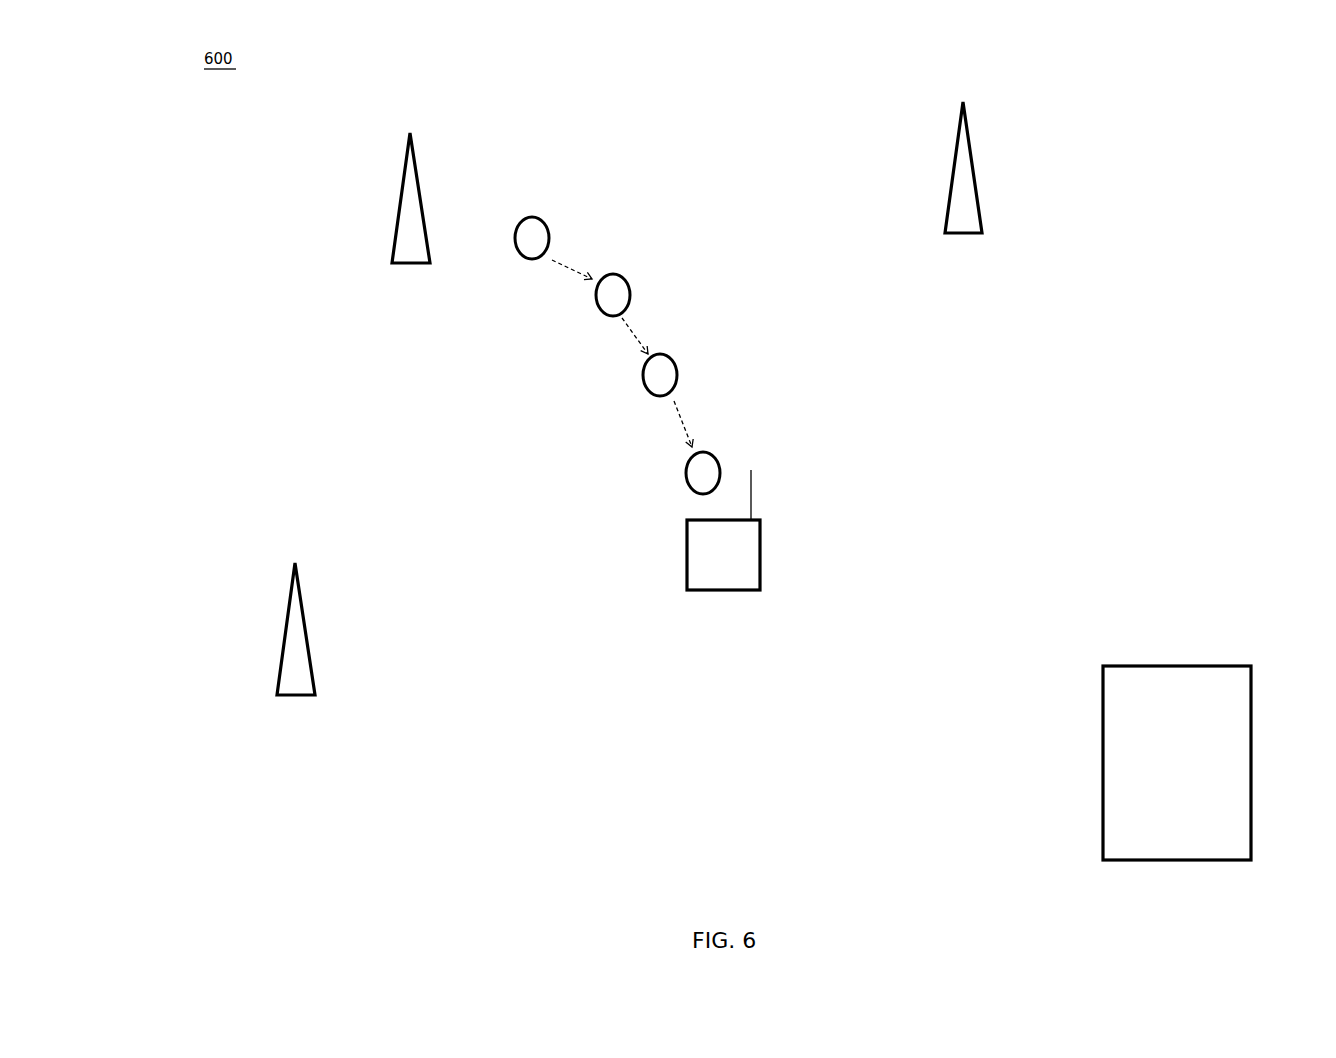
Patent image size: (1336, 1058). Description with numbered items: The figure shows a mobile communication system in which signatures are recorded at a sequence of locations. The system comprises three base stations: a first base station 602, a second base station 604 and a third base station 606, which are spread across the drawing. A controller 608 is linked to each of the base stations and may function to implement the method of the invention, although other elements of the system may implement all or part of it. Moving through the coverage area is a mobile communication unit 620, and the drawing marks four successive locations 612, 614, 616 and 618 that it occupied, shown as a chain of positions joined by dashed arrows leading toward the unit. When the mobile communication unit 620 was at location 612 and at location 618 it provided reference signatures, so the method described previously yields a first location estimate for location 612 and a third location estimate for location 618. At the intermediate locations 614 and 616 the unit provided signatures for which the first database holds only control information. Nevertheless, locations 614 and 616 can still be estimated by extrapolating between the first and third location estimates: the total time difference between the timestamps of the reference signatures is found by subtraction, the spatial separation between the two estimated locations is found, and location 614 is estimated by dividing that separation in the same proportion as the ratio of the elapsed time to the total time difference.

The base station BS1 602 is at (397, 198).
The base station BS2 604 is at (282, 639).
The base station BS3 606 is at (973, 148).
The controller 608 is at (1103, 732).
The first location 612 is at (543, 217).
The second location 614 is at (627, 275).
The third location 616 is at (680, 382).
The fourth location 618 is at (685, 482).
The mobile communication unit 620 is at (760, 550).